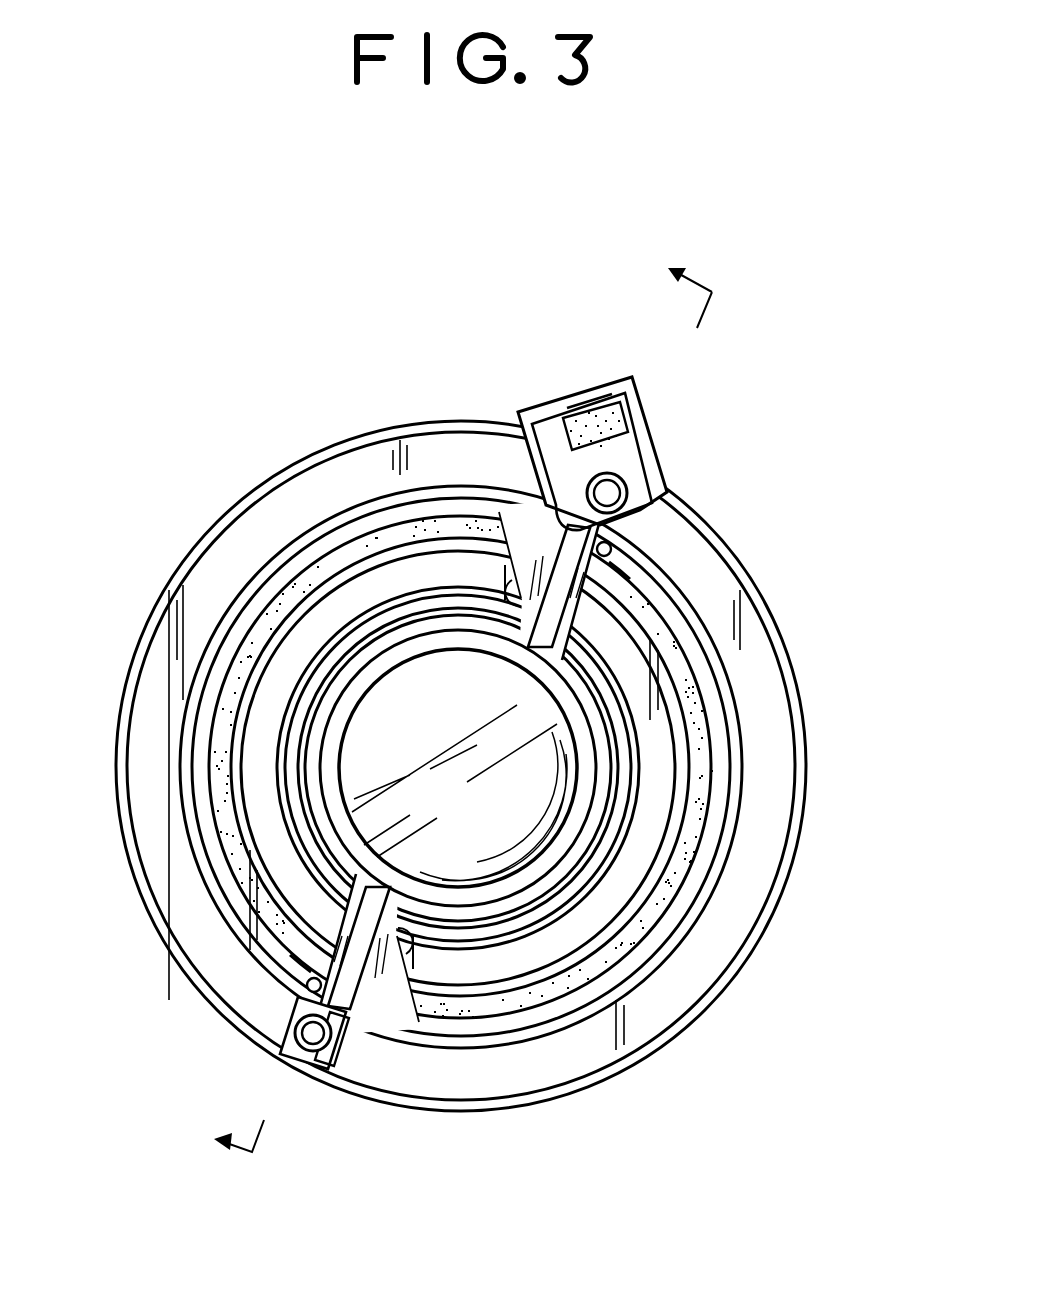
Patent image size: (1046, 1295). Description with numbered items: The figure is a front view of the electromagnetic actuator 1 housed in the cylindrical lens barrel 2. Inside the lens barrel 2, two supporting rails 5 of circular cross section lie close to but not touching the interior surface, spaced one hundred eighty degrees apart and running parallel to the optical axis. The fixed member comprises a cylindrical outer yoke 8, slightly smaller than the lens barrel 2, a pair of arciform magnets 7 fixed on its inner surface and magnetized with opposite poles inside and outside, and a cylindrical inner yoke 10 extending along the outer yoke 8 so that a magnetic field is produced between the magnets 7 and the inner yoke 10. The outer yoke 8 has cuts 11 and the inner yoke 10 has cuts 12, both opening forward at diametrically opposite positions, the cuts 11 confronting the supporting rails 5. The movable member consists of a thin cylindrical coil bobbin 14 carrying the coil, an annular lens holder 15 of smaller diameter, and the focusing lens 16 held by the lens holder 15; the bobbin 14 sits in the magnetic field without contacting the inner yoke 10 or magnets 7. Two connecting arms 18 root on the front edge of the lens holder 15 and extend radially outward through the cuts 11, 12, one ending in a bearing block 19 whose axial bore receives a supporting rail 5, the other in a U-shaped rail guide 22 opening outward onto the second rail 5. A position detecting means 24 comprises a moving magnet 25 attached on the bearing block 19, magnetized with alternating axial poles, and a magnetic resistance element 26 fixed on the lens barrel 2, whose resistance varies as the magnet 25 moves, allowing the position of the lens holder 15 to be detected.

The electromagnetic actuator 1 is at (796, 333).
The lens barrel 2 is at (285, 470).
The supporting rails 5 is at (624, 500).
The magnets 7 is at (695, 820).
The outer yoke 8 is at (722, 722).
The inner yoke 10 is at (592, 880).
The cuts 11 is at (612, 550).
The cuts 12 is at (520, 588).
The coil bobbin 14 is at (250, 752).
The lens holder 15 is at (312, 730).
The focusing lens 16 is at (565, 818).
The connecting arms 18 is at (605, 606).
The bearing block 19 is at (672, 441).
The rail guide 22 is at (314, 1062).
The position detecting means 24 is at (694, 402).
The moving magnet 25 is at (632, 424).
The magnetic resistance element 26 is at (612, 396).